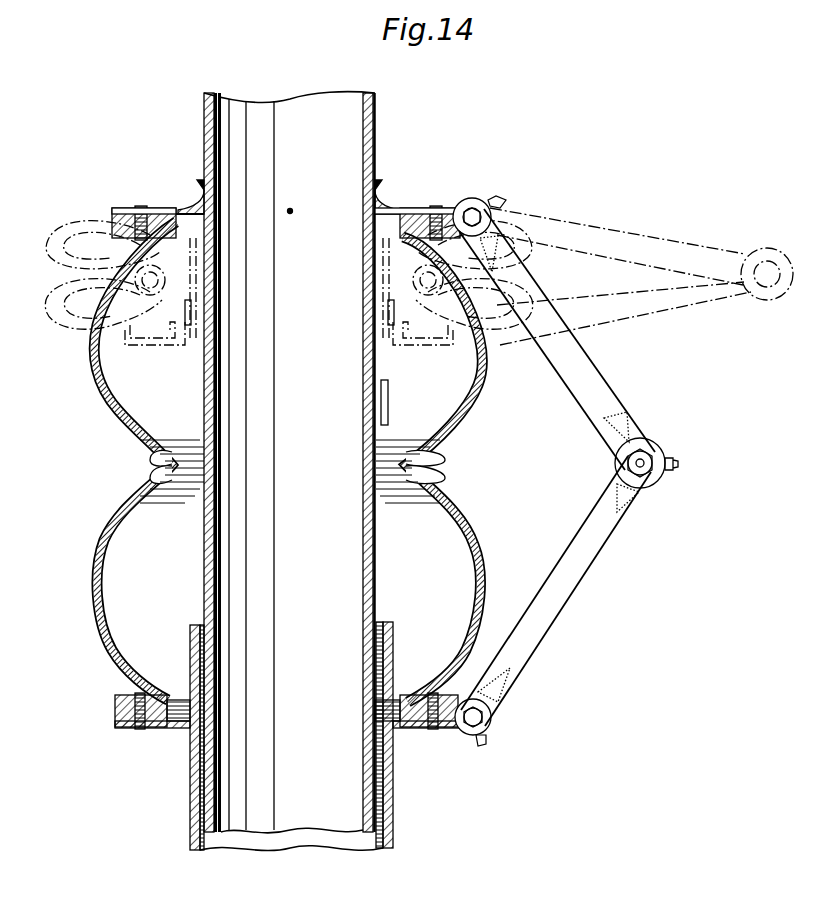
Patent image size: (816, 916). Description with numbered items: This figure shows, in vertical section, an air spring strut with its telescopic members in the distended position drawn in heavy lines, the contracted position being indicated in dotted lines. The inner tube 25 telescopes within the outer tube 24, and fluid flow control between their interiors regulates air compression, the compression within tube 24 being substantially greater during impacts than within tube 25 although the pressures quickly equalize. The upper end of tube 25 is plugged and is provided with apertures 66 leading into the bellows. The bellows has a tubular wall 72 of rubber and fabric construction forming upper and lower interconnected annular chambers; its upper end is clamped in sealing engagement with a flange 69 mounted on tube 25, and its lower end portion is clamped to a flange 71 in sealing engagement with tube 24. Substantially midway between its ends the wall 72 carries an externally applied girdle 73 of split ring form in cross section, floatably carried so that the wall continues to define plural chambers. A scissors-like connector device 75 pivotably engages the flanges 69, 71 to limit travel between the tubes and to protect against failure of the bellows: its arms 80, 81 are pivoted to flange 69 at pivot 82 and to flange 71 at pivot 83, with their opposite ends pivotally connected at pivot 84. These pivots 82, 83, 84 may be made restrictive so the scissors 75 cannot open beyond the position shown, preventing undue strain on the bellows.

The tube 24 is at (394, 815).
The tube 25 is at (377, 592).
The apertures 66 is at (290, 211).
The flange 69 is at (410, 208).
The flange 71 is at (423, 729).
The tubular wall 72 is at (468, 518).
The girdle 73 is at (440, 453).
The scissors-like connector device 75 is at (600, 366).
The arm 80 is at (584, 402).
The arm 81 is at (572, 545).
The pivot 82 is at (475, 204).
The pivot 83 is at (490, 721).
The pivot 84 is at (650, 456).